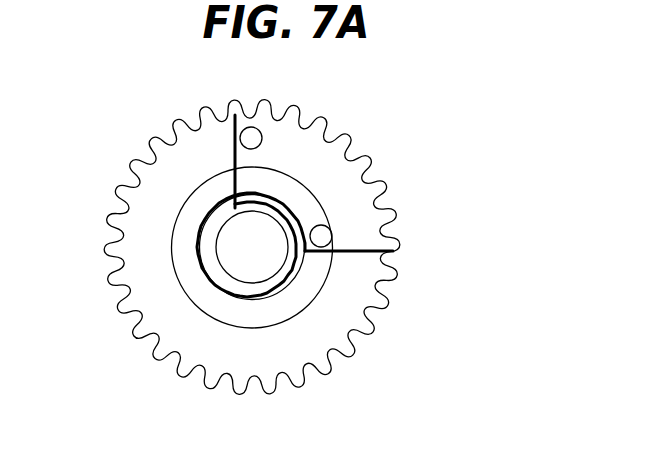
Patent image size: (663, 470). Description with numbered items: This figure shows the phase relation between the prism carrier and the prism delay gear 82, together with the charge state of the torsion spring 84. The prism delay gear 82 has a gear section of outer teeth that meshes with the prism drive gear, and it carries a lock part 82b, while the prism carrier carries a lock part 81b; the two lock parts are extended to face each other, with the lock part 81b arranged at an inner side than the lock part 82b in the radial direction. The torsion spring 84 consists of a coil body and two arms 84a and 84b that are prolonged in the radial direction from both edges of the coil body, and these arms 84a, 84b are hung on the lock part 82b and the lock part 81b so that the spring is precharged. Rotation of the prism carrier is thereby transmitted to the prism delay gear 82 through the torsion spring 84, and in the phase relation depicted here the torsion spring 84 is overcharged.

The prism delay gear 82 is at (393, 213).
The lock part 82b is at (258, 140).
The lock part 81b is at (329, 235).
The torsion spring 84 is at (291, 270).
The arm 84a is at (233, 157).
The arm 84b is at (348, 254).